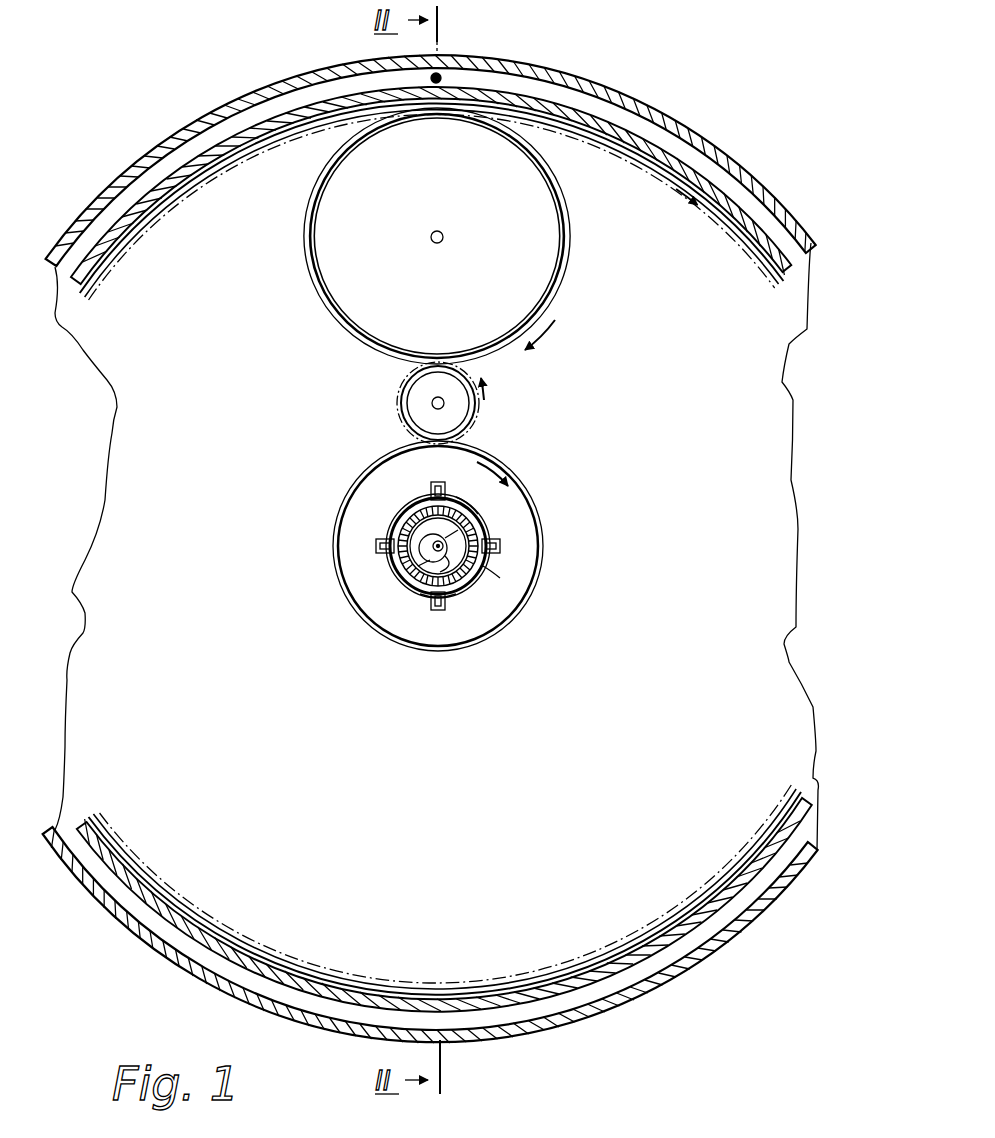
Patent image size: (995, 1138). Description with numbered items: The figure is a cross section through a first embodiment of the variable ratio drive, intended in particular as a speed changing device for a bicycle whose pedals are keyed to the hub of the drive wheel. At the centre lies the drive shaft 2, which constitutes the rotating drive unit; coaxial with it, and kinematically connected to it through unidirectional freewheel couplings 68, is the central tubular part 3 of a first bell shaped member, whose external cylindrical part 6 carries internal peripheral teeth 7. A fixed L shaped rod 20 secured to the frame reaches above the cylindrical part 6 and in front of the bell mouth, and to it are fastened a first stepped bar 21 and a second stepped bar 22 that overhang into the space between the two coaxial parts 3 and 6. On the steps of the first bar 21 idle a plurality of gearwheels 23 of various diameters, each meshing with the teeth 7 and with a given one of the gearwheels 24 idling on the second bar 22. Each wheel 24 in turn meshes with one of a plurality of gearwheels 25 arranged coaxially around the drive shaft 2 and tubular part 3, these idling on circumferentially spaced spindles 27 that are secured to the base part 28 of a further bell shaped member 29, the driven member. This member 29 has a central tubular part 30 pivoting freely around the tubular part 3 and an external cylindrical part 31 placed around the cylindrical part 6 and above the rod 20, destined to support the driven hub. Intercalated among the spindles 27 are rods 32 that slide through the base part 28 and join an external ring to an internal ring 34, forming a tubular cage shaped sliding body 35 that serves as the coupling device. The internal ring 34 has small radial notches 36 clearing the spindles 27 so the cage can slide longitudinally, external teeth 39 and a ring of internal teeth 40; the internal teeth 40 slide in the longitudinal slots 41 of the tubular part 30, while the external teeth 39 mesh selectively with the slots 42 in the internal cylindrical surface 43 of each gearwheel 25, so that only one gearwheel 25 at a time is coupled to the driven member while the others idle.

The drive shaft 2 is at (453, 592).
The central tubular part 3 is at (383, 556).
The external cylindrical part 6 is at (755, 224).
The internal peripheral teeth 7 is at (722, 222).
The L shaped rod 20 is at (446, 77).
The first stepped bar 21 is at (442, 236).
The second stepped bar 22 is at (432, 402).
The gearwheels 23 is at (568, 268).
The gearwheels 24 is at (486, 410).
The gearwheels 25 is at (543, 531).
The spindles 27 is at (478, 514).
The base part 28 is at (140, 386).
The bell shaped member 29 is at (101, 474).
The central tubular part 30 is at (402, 578).
The external cylindrical part 31 is at (720, 158).
The rods 32 is at (424, 600).
The internal ring 34 is at (500, 578).
The cage shaped sliding body 35 is at (405, 488).
The radial notches 36 is at (490, 520).
The external teeth 39 is at (500, 548).
The internal teeth 40 is at (497, 528).
The longitudinal slots 41 is at (456, 495).
The slots 42 is at (437, 483).
The internal cylindrical surface 43 is at (382, 538).
The unidirectional freewheel couplings 68 is at (388, 514).